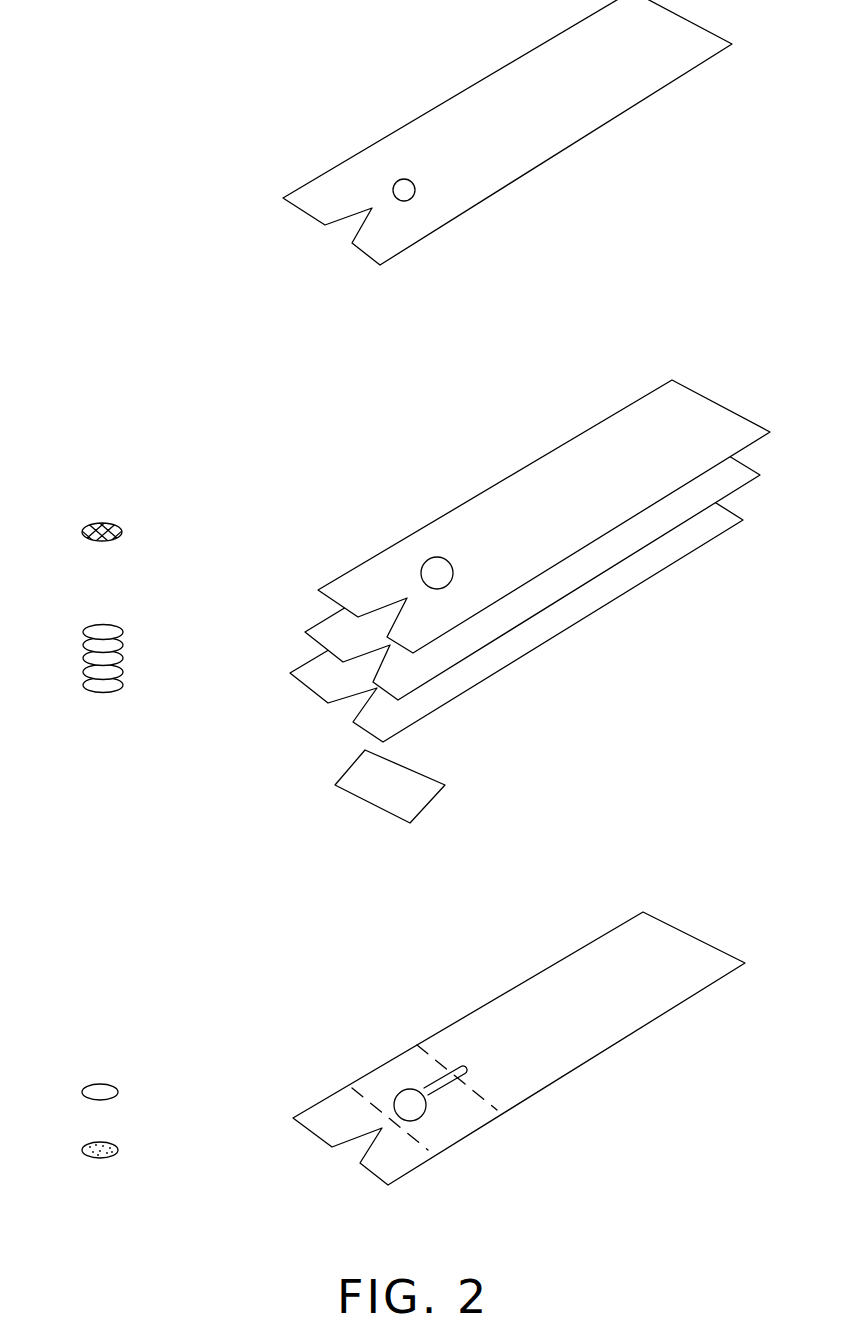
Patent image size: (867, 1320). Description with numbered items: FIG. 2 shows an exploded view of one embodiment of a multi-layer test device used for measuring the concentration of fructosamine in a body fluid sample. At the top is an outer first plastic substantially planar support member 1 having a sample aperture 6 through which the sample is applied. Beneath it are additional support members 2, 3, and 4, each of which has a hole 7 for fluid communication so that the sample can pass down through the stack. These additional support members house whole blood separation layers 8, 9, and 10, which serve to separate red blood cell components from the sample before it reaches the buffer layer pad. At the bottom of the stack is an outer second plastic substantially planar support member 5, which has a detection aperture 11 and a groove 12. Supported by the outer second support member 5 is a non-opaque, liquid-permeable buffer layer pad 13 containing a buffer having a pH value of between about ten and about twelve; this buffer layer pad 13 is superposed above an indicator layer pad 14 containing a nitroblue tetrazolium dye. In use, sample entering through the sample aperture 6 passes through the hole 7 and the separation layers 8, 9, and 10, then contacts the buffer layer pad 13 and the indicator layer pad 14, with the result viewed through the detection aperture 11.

The outer first plastic substantially planar support member 1 is at (660, 40).
The additional support member 2 is at (720, 417).
The additional support member 3 is at (727, 480).
The additional support member 4 is at (718, 523).
The outer second plastic substantially planar support member 5 is at (663, 968).
The sample aperture 6 is at (400, 180).
The hole 7 is at (432, 570).
The whole blood separation layer 8 is at (83, 532).
The whole blood separation layer 9 is at (84, 685).
The whole blood separation layer 10 is at (365, 790).
The detection aperture 11 is at (407, 1100).
The groove 12 is at (447, 1077).
The buffer layer pad 13 is at (82, 1090).
The indicator layer pad 14 is at (82, 1148).